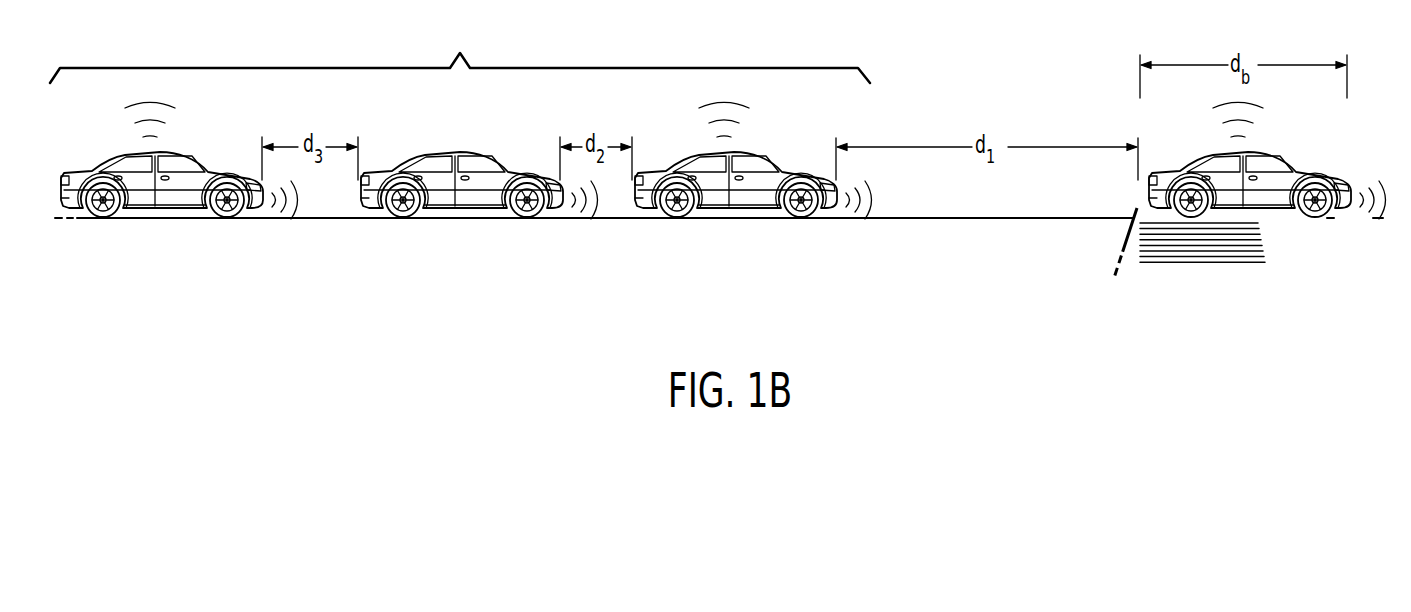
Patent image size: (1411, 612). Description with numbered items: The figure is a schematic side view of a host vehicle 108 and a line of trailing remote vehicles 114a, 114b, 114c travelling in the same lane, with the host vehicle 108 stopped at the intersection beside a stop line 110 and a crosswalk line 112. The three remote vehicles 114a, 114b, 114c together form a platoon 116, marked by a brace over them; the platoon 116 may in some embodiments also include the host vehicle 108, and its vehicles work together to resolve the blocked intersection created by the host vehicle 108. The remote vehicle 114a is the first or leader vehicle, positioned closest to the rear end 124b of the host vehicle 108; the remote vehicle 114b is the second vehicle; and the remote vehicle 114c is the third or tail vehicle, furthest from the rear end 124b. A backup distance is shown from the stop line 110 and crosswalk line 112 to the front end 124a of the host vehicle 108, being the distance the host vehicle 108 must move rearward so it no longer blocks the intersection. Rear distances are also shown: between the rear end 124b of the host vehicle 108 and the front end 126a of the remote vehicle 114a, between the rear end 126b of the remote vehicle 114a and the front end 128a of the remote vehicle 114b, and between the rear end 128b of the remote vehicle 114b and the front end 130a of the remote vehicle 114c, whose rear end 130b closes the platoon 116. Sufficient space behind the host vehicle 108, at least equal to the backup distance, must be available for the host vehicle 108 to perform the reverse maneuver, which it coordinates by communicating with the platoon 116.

The host vehicle 108 is at (1264, 182).
The stop line 110 is at (1127, 233).
The crosswalk line 112 is at (1200, 263).
The remote vehicle 114a is at (750, 182).
The remote vehicle 114b is at (476, 185).
The remote vehicle 114c is at (176, 182).
The platoon 116 is at (460, 54).
The front end of the host vehicle 124a is at (1323, 149).
The rear end of the host vehicle 124b is at (1165, 146).
The front end of the remote vehicle 126a is at (809, 149).
The rear end of the remote vehicle 126b is at (651, 146).
The front end of the remote vehicle 128a is at (535, 149).
The rear end of the remote vehicle 128b is at (377, 146).
The front end of the remote vehicle 130a is at (224, 172).
The rear end of the remote vehicle 130b is at (67, 170).